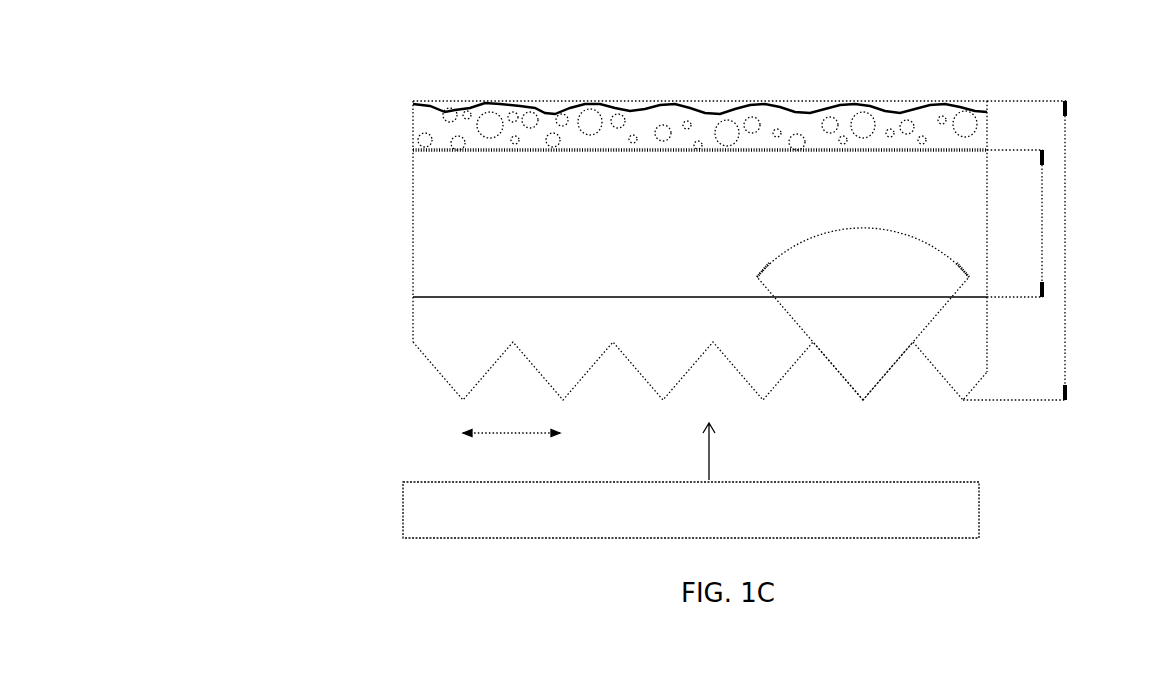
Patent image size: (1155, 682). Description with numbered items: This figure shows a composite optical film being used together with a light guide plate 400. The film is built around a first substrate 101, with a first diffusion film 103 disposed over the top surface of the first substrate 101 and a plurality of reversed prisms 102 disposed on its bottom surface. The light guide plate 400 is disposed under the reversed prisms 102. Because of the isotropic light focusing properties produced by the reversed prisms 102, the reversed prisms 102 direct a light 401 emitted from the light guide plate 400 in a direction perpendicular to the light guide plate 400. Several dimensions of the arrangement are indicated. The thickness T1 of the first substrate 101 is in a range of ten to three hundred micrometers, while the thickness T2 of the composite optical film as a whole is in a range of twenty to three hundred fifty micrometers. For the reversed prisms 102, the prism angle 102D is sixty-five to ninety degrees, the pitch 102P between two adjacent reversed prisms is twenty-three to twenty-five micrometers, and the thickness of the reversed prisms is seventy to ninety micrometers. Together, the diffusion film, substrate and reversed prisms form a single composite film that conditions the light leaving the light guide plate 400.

The first diffusion film 103 is at (413, 128).
The first substrate 101 is at (700, 252).
The reversed prisms 102 is at (413, 358).
The prism angle 102D is at (858, 227).
The pitch 102P is at (511, 452).
The light 401 is at (732, 451).
The light guide plate 400 is at (691, 510).
The thickness of the first substrate T1 is at (1042, 223).
The thickness of the composite optical film T2 is at (1065, 250).